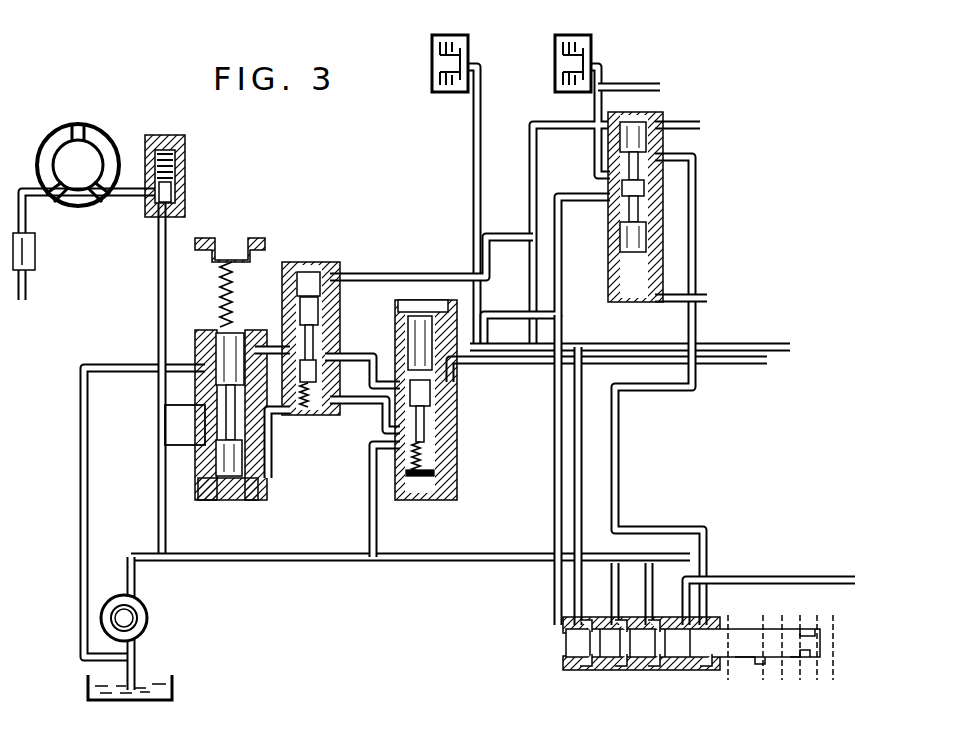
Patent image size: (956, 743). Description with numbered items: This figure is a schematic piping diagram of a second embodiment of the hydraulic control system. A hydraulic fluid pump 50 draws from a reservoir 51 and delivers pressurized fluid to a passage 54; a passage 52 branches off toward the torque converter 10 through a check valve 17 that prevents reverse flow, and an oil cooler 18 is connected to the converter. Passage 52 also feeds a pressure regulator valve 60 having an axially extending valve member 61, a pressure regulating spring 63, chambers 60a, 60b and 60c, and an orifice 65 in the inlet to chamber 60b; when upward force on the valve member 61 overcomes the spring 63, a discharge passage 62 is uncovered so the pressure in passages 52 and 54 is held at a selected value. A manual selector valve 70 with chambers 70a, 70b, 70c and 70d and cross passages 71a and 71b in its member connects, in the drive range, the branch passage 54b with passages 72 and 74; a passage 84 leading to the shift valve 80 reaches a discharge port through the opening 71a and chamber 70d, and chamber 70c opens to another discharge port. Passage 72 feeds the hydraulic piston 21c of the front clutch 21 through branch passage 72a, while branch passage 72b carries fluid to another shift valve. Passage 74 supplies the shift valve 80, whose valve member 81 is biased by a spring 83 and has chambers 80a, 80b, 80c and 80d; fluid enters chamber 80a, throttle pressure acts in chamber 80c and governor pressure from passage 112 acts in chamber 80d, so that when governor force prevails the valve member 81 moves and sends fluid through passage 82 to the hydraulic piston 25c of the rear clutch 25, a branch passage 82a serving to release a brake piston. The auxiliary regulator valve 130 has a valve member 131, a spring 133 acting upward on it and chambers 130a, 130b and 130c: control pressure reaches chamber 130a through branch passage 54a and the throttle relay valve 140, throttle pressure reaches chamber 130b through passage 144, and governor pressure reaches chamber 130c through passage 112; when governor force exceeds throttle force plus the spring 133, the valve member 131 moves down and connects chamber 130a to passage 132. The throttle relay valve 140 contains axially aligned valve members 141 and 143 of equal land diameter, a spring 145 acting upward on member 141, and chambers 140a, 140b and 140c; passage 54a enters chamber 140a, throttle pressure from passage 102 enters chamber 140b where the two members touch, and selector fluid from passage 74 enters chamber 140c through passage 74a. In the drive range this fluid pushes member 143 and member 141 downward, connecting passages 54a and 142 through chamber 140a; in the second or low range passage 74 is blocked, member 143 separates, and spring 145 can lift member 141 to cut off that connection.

The torque converter 10 is at (65, 124).
The check valve 17 is at (176, 168).
The oil cooler 18 is at (35, 247).
The front clutch 21 is at (430, 47).
The hydraulic piston 21c is at (452, 39).
The rear clutch 25 is at (552, 49).
The hydraulic piston 25c is at (590, 55).
The hydraulic fluid pump 50 is at (114, 600).
The hydraulic fluid reservoir 51 is at (172, 690).
The passage 52 is at (158, 514).
The passage 54 is at (240, 560).
The branch passage 54a is at (370, 530).
The branch passage 54b is at (646, 589).
The pressure regulator valve 60 is at (206, 367).
The hydraulic fluid chamber 60a is at (210, 500).
The hydraulic fluid chamber 60b is at (206, 461).
The hydraulic fluid chamber 60c is at (186, 425).
The valve member 61 is at (255, 349).
The discharge passage 62 is at (122, 512).
The pressure regulating spring 63 is at (238, 280).
The orifice 65 is at (160, 468).
The manual selector valve 70 is at (554, 639).
The chamber 70a is at (556, 623).
The chamber 70b is at (578, 671).
The chamber 70c is at (618, 667).
The chamber 70d is at (704, 588).
The cross passage 71a is at (700, 663).
The cross passage 71b is at (572, 649).
The hydraulic fluid passage 72 is at (581, 457).
The branch passage 72a is at (484, 261).
The branch passage 72b is at (626, 341).
The passage 74 is at (554, 452).
The passage 74a is at (547, 272).
The shift valve 80 is at (623, 125).
The chamber 80a is at (615, 193).
The chamber 80b is at (612, 167).
The chamber 80c is at (616, 287).
The chamber 80d is at (665, 126).
The valve member 81 is at (648, 199).
The passage 82 is at (596, 117).
The passage 82a is at (618, 94).
The bias spring 83 is at (648, 305).
The passage 84 is at (634, 529).
The passage 102 is at (496, 364).
The passage 112 is at (474, 264).
The auxiliary regulator valve 130 is at (304, 270).
The chamber 130a is at (358, 353).
The chamber 130b is at (340, 432).
The chamber 130c is at (359, 261).
The valve member 131 is at (318, 267).
The passage 132 is at (290, 444).
The biasing spring 133 is at (305, 412).
The throttle relay valve 140 is at (412, 260).
The chamber 140a is at (442, 469).
The chamber 140b is at (440, 395).
The chamber 140c is at (423, 261).
The valve member 141 is at (476, 456).
The passage 142 is at (366, 445).
The valve member 143 is at (478, 372).
The passage 144 is at (403, 450).
The spring 145 is at (416, 478).